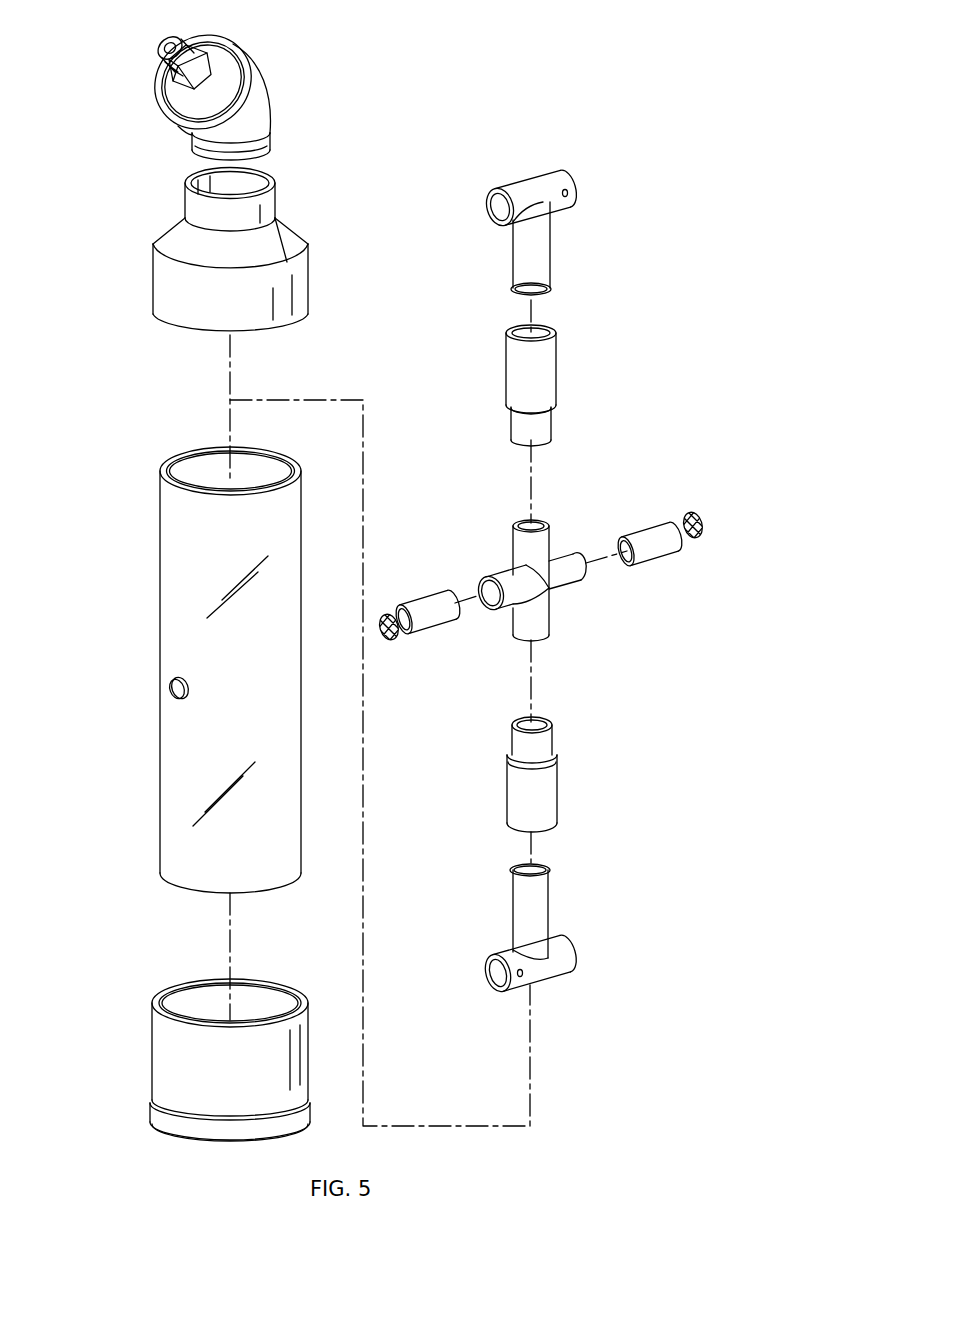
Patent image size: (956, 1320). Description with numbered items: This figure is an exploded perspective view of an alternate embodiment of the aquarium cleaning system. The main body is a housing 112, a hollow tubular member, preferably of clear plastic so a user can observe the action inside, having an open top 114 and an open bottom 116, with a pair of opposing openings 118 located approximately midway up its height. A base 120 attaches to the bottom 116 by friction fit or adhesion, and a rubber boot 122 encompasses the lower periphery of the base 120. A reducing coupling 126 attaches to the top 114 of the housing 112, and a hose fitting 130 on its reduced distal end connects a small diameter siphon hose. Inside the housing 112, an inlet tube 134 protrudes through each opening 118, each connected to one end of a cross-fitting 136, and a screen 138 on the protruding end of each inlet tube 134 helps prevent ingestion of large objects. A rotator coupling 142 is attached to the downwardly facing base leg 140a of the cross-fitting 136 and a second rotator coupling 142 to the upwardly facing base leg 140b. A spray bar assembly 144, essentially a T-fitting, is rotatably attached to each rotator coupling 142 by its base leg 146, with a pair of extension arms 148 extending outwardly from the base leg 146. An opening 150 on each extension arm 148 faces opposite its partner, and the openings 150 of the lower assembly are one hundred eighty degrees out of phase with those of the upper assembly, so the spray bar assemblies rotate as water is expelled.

The housing 112 is at (184, 678).
The open top 114 is at (164, 462).
The open bottom 116 is at (170, 879).
The openings 118 is at (170, 694).
The base 120 is at (185, 1077).
The rubber boot 122 is at (160, 1127).
The reducing coupling 126 is at (262, 252).
The hose fitting 130 is at (253, 110).
The inlet tube 134 is at (430, 607).
The cross-fitting 136 is at (574, 584).
The screen 138 is at (700, 516).
The downwardly facing base leg 140a is at (540, 640).
The upwardly facing base leg 140b is at (540, 538).
The rotator coupling 142 is at (548, 355).
The spray bar assembly 144 is at (545, 569).
The base leg 146 is at (550, 230).
The extension arms 148 is at (558, 172).
The opening 150 is at (515, 190).